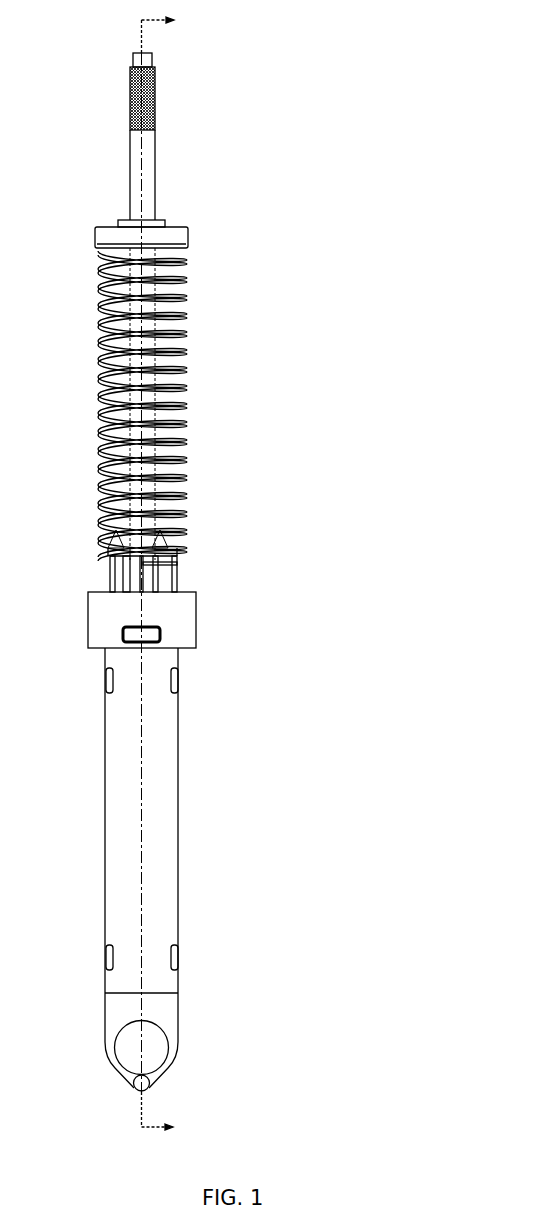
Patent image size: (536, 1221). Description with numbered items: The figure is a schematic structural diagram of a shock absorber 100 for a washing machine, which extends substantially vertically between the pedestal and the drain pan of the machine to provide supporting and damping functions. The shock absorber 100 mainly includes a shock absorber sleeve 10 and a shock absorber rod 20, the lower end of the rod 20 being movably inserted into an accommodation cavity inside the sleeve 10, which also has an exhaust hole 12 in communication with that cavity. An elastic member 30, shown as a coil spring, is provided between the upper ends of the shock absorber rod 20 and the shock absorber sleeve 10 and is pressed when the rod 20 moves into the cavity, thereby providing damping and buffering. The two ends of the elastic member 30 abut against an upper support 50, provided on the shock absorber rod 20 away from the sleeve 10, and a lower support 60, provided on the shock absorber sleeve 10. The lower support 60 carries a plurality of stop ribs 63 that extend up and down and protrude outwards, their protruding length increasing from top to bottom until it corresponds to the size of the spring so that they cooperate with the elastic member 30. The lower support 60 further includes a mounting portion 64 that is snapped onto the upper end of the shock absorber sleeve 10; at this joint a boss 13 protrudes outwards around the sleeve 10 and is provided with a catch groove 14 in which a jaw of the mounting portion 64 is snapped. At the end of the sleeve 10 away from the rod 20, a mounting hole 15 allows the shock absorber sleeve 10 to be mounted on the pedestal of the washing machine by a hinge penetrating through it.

The shock absorber 100 is at (244, 579).
The shock absorber rod 20 is at (150, 168).
The upper support 50 is at (168, 238).
The elastic member 30 is at (180, 360).
The lower support 60 is at (184, 547).
The stop ribs 63 is at (170, 578).
The mounting portion 64 is at (192, 597).
The boss 13 is at (174, 626).
The catch groove 14 is at (157, 630).
The shock absorber sleeve 10 is at (183, 869).
The exhaust hole 12 is at (178, 950).
The mounting hole 15 is at (157, 1052).